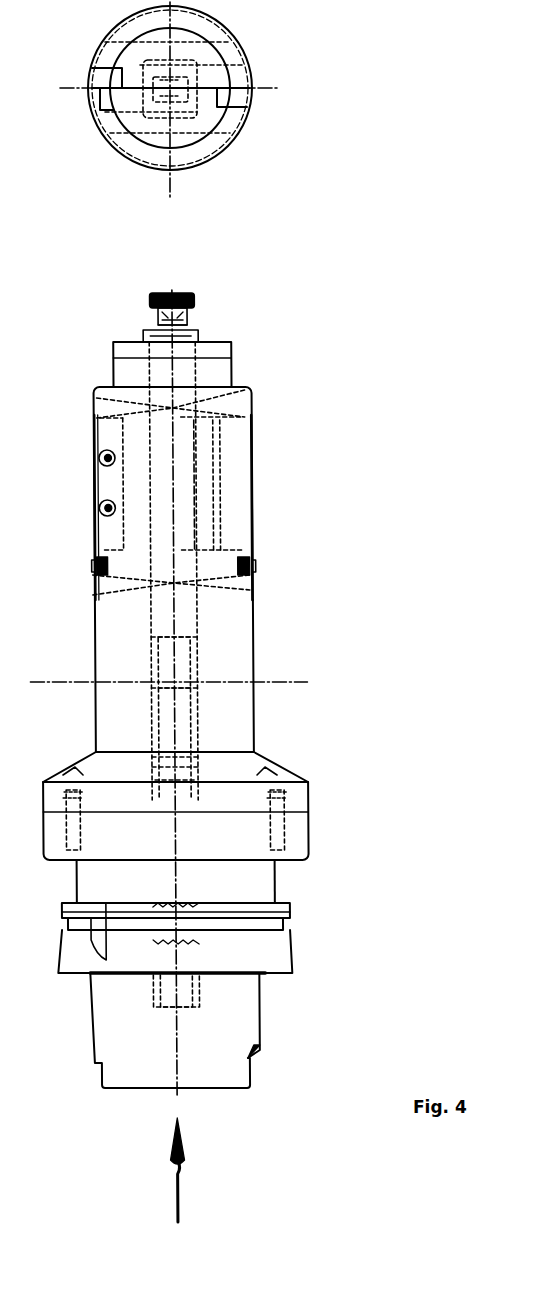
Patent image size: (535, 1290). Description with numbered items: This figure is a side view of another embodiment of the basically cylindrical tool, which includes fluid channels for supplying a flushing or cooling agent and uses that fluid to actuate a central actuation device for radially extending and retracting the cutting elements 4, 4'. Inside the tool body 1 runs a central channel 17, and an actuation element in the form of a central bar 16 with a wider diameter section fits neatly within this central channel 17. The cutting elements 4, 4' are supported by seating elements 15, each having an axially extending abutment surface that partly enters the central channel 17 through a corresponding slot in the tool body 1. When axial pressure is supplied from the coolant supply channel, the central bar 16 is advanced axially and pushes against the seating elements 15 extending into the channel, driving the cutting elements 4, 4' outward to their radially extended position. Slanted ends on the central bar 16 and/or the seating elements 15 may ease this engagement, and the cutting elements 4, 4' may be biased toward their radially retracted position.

The tool body 1 is at (228, 620).
The cutting element 4 is at (209, 493).
The cutting element 4' is at (68, 484).
The seating element 15 is at (204, 447).
The central bar 16 is at (180, 705).
The central channel 17 is at (184, 392).